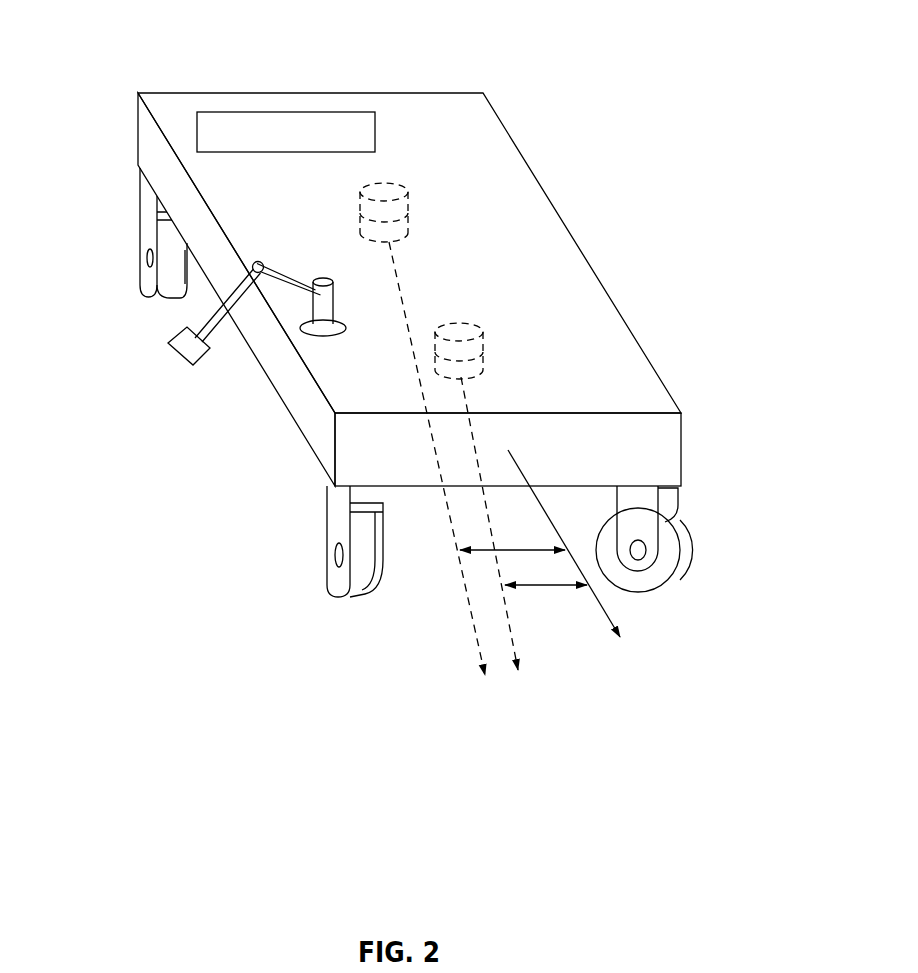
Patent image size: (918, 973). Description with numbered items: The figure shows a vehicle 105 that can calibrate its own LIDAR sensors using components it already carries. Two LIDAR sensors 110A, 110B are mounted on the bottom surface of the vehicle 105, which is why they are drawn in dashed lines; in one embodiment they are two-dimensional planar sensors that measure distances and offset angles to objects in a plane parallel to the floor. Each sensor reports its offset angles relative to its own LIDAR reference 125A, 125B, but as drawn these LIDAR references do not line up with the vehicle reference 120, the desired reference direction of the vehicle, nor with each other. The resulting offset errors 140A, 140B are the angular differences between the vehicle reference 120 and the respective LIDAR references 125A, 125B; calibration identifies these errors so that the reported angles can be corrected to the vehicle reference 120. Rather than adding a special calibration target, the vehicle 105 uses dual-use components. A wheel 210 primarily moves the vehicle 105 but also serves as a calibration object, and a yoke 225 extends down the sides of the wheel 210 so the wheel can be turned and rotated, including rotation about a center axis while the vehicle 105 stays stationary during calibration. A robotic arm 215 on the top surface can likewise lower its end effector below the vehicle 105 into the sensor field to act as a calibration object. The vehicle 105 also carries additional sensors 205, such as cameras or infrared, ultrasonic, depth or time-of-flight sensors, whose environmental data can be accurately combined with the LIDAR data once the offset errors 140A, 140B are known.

The vehicle 105 is at (322, 93).
The sensors 205 is at (286, 132).
The LIDAR sensor 110A is at (483, 352).
The LIDAR sensor 110B is at (405, 212).
The robotic arm 215 is at (200, 328).
The wheel 210 is at (188, 360).
The yoke 225 is at (659, 505).
The vehicle reference 120 is at (605, 608).
The LIDAR reference 125A is at (512, 623).
The LIDAR reference 125B is at (467, 592).
The offset error 140A is at (577, 586).
The offset error 140B is at (475, 551).